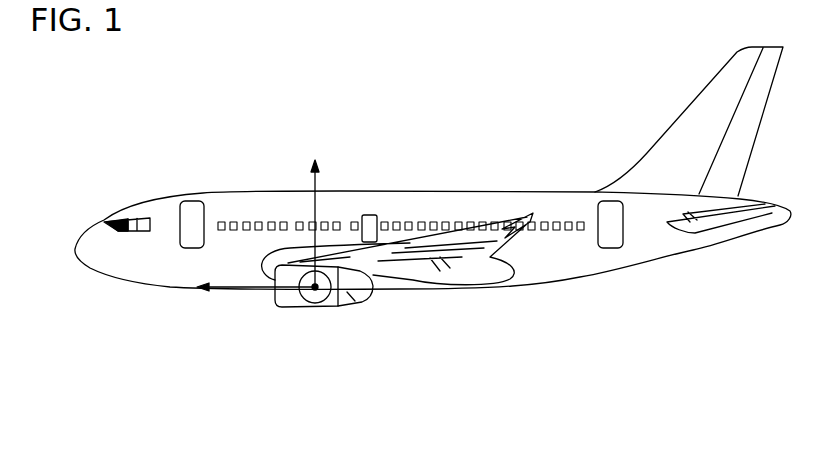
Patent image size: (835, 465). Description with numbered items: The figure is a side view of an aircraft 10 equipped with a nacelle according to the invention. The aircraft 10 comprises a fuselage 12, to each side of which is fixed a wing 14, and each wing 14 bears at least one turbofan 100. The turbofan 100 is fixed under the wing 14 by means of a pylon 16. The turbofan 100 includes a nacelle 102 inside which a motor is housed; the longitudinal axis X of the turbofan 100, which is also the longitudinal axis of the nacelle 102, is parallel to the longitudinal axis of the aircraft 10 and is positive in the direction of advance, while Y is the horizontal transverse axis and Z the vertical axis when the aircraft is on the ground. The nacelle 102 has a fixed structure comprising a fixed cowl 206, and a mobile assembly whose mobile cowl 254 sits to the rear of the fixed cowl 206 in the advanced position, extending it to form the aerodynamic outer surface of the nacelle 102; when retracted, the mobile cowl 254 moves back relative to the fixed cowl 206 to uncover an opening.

The aircraft 10 is at (433, 235).
The fuselage 12 is at (650, 242).
The wing 14 is at (397, 200).
The pylon 16 is at (393, 267).
The turbofan 100 is at (392, 349).
The nacelle 102 is at (356, 348).
The fixed cowl 206 is at (281, 303).
The mobile cowl 254 is at (353, 293).